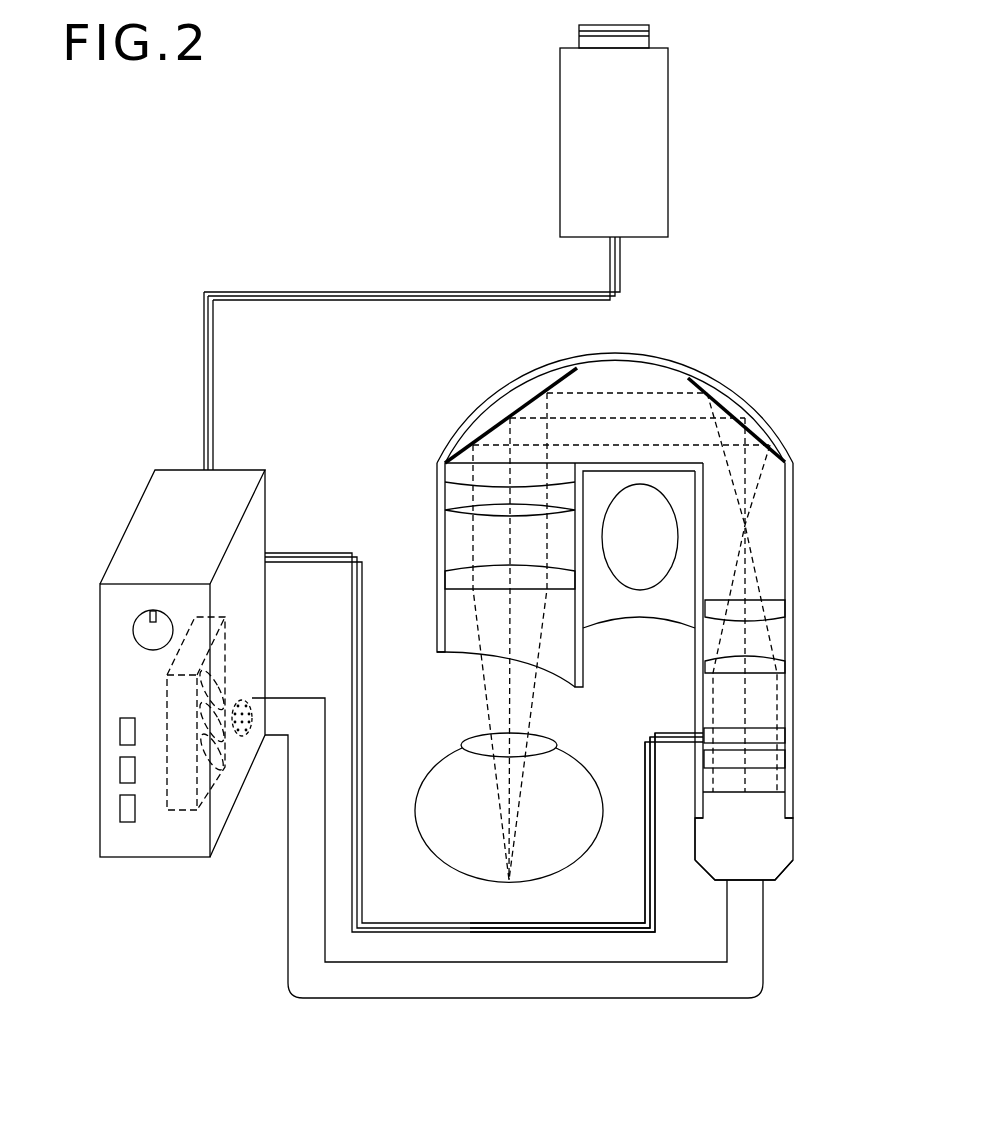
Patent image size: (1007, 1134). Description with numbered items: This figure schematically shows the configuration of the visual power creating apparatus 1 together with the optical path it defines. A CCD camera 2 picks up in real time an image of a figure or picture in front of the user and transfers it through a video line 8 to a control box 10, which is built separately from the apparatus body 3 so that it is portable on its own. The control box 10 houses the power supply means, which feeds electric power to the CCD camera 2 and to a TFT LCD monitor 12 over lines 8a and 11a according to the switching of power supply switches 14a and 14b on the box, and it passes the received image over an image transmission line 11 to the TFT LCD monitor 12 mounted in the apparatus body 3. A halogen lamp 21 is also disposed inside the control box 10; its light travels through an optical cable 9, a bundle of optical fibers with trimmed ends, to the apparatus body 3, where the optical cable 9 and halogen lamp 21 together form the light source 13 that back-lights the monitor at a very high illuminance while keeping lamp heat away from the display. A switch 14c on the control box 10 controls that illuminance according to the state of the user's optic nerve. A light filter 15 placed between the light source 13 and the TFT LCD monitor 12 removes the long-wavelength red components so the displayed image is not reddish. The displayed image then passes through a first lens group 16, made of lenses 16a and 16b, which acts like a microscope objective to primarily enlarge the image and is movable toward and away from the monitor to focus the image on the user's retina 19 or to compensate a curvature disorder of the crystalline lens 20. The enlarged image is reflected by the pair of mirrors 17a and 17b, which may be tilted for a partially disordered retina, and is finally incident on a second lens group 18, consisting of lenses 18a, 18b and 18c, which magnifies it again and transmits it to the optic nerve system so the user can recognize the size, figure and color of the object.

The visual power creating apparatus 1 is at (800, 450).
The CCD camera 2 is at (650, 143).
The apparatus body 3 is at (718, 348).
The video line 8 is at (204, 370).
The line 8a is at (323, 300).
The optical cable 9 is at (548, 985).
The control box 10 is at (175, 842).
The image transmission line 11 is at (423, 913).
The line 11a is at (472, 930).
The TFT LCD monitor 12 is at (775, 735).
The light source 13 is at (775, 847).
The power supply switch 14a is at (120, 770).
The power supply switch 14b is at (120, 808).
The switch 14c is at (138, 630).
The light filter 15 is at (775, 761).
The first lens group 16 is at (872, 596).
The lens 16a is at (775, 605).
The lens 16b is at (775, 666).
The mirror 17a is at (492, 412).
The mirror 17b is at (737, 410).
The second lens group 18 is at (362, 465).
The lens 18a is at (455, 471).
The lens 18b is at (455, 511).
The lens 18c is at (455, 581).
The retina 19 is at (535, 880).
The crystalline lens 20 is at (545, 742).
The halogen lamp 21 is at (180, 697).